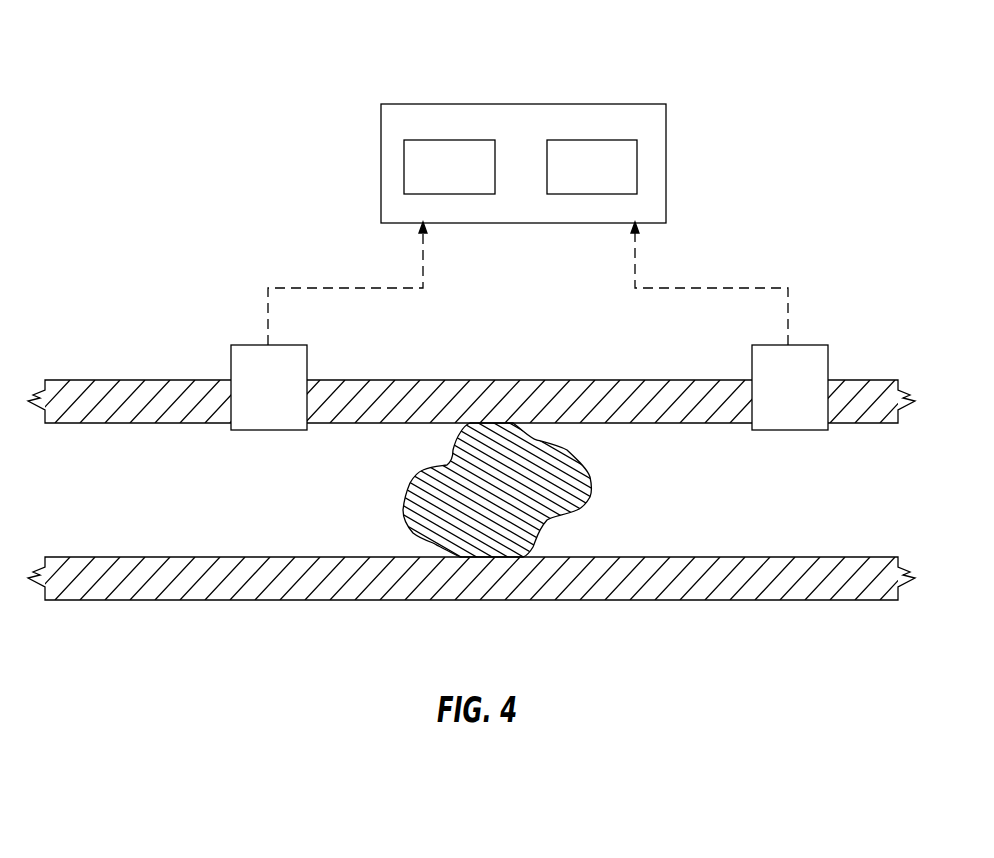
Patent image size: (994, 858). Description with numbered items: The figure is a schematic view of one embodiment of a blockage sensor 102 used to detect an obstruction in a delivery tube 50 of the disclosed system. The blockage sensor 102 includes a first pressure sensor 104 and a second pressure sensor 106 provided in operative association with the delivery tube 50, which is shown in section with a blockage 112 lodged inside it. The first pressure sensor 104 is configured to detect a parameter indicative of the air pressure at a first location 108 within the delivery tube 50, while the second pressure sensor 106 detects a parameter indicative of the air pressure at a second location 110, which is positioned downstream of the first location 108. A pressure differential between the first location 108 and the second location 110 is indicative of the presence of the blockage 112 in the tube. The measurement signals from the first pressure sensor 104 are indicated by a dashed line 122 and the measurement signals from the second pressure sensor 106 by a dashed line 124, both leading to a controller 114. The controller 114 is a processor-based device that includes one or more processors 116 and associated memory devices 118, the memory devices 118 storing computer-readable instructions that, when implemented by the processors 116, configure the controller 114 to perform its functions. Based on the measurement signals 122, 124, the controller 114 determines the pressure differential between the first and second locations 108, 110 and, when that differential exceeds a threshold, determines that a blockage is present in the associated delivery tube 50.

The blockage sensor 102 is at (133, 95).
The first pressure sensor 104 is at (231, 360).
The second pressure sensor 106 is at (828, 358).
The first location 108 is at (292, 495).
The second location 110 is at (809, 495).
The blockage 112 is at (547, 520).
The controller 114 is at (573, 163).
The processor 116 is at (472, 182).
The memory device 118 is at (614, 182).
The measurement signals from the first pressure sensor 122 is at (290, 288).
The measurement signals from the second pressure sensor 124 is at (765, 285).
The primary delivery tube 50 is at (162, 600).